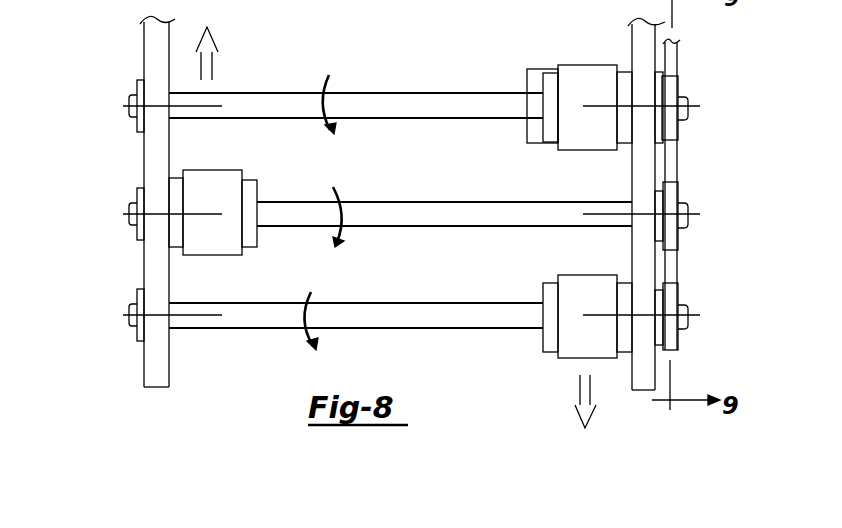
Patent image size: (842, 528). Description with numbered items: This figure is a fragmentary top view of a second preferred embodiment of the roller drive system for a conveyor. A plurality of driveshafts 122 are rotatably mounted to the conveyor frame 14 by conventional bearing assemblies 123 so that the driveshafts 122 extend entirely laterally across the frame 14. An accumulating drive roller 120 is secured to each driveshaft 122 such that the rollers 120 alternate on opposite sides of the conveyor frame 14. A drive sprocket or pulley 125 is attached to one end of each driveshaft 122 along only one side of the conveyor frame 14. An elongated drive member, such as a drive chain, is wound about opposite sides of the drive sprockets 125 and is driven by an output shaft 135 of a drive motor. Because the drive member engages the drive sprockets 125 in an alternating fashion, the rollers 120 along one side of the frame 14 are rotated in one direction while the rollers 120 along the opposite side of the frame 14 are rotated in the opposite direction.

The conveyor frame 14 is at (158, 375).
The accumulating drive roller 120 is at (222, 178).
The driveshaft 122 is at (440, 218).
The bearing assembly 123 is at (141, 232).
The drive sprocket 125 is at (672, 193).
The output shaft 135 is at (421, 5).